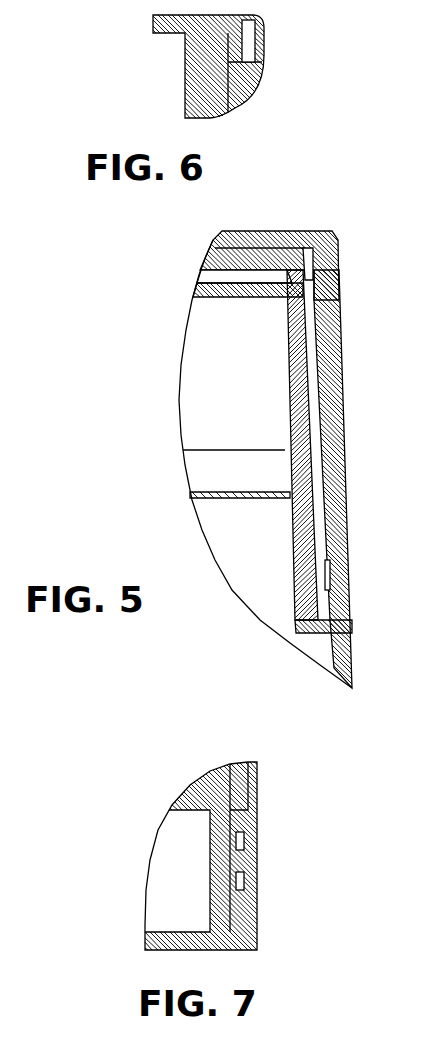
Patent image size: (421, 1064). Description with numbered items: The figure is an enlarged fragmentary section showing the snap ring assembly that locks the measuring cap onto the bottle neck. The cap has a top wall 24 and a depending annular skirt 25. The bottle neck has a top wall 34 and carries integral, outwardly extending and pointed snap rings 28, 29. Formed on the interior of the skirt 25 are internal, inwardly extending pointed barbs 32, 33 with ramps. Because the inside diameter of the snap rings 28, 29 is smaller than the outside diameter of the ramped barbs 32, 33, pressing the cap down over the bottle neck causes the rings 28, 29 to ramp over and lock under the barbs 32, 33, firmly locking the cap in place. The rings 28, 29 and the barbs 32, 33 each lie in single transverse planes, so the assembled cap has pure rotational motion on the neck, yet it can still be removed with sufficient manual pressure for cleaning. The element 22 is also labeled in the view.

The cap body 22 is at (270, 388).
The top wall 24 is at (255, 243).
The depending annular skirt 25 is at (340, 562).
The snap ring 28 is at (300, 292).
The snap ring 29 is at (323, 498).
The barb 32 is at (308, 325).
The barb 33 is at (293, 560).
The top wall 34 is at (212, 259).